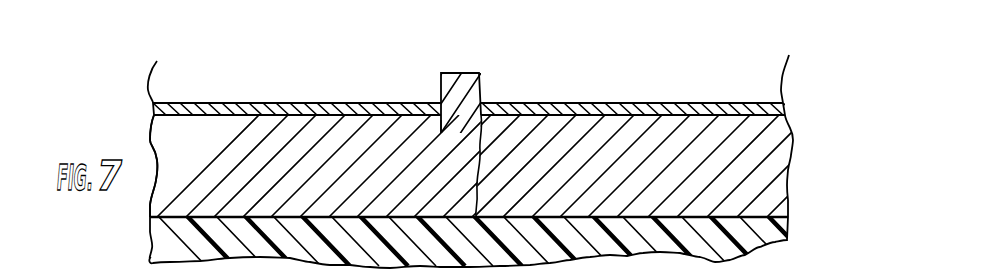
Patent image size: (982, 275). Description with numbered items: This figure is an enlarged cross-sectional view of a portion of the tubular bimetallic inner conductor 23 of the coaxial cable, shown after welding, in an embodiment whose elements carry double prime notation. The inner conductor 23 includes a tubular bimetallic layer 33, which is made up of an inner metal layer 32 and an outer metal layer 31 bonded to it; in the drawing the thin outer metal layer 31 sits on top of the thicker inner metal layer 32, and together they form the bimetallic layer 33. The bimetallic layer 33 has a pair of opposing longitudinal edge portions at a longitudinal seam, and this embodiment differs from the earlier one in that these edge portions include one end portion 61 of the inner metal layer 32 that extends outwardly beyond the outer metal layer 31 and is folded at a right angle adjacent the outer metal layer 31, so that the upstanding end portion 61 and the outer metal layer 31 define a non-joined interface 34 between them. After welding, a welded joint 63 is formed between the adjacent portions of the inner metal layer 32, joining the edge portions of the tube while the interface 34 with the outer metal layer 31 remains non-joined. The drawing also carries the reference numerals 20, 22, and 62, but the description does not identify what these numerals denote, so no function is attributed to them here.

The assembly 20 is at (210, 62).
The base layer 22 is at (783, 224).
The inner conductor 23 is at (694, 92).
The outer metal layer 31 is at (753, 110).
The inner metal layer 32 is at (773, 145).
The tubular bimetallic layer 33 is at (153, 150).
The non-joined interface 34 is at (438, 127).
The end portion 61 is at (430, 87).
The layer surface 62 is at (594, 92).
The welded joint 63 is at (478, 88).